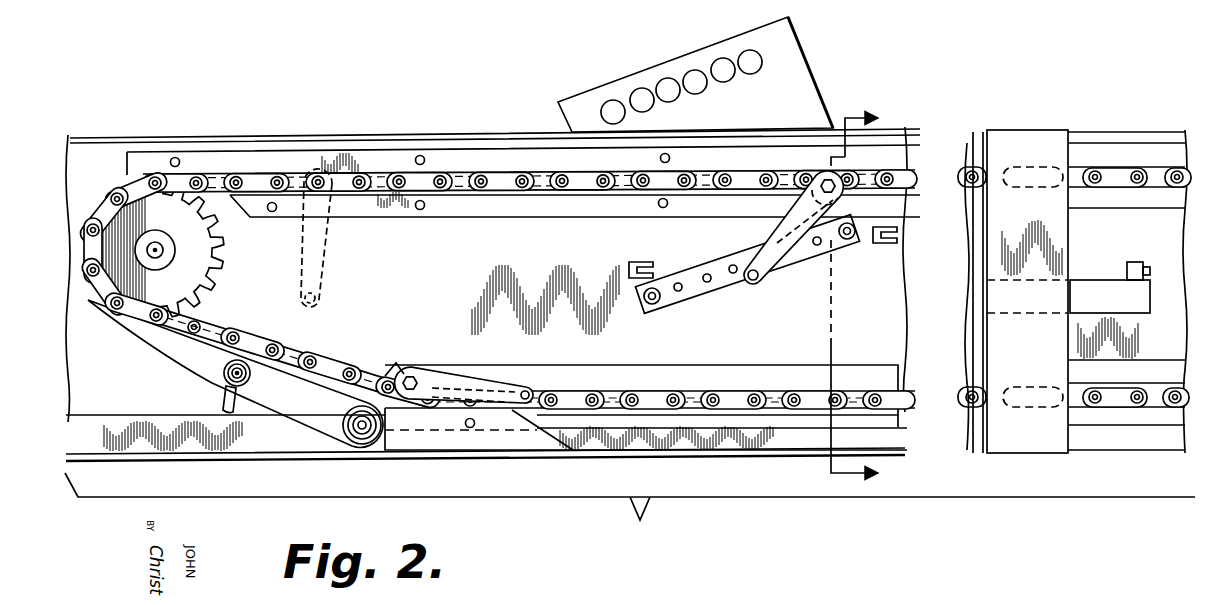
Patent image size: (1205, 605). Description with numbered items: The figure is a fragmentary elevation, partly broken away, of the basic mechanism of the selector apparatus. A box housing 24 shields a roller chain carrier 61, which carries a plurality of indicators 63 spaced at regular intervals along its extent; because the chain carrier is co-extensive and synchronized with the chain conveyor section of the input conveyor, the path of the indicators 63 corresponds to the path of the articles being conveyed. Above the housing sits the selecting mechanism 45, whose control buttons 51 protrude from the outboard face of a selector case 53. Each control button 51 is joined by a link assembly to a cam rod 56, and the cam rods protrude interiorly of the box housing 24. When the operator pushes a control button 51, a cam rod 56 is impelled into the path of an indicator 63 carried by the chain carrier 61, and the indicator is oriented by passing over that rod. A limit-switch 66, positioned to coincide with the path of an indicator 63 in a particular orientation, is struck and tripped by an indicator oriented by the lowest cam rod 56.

The box housing 24 is at (356, 136).
The roller chain carrier 61 is at (498, 178).
The indicators 63 is at (342, 258).
The selecting mechanism 45 is at (709, 74).
The control buttons 51 is at (608, 100).
The selector case 53 is at (686, 69).
The cam rod 56 is at (678, 292).
The limit-switch 66 is at (1135, 262).